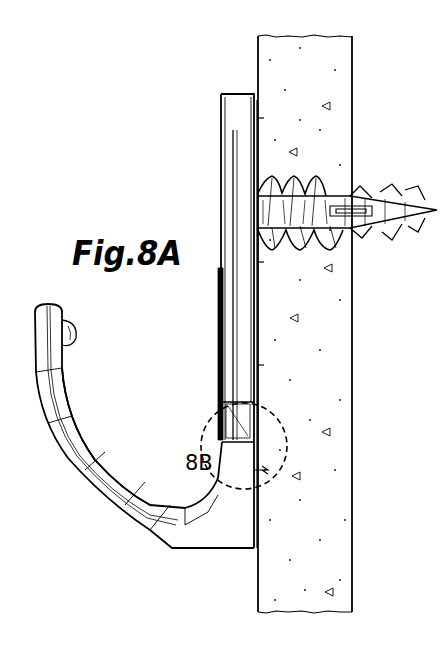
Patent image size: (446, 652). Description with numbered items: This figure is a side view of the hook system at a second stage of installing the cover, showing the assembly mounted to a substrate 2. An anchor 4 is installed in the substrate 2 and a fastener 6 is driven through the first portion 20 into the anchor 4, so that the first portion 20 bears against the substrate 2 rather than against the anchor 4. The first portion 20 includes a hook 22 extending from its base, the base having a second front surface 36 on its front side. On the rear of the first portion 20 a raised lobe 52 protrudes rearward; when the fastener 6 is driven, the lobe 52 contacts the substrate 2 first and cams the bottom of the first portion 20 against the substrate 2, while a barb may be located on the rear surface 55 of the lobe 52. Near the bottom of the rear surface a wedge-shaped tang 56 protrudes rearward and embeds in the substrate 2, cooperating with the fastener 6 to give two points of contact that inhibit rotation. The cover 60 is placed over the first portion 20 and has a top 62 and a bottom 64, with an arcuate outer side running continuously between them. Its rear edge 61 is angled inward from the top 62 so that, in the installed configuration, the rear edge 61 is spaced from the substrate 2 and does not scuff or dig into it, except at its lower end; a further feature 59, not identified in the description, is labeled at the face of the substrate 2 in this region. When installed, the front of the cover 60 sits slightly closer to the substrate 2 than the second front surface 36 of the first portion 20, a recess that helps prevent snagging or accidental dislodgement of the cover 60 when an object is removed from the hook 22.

The substrate 2 is at (348, 557).
The anchor 4 is at (352, 240).
The fastener 6 is at (255, 216).
The first portion 20 is at (72, 492).
The hook 22 is at (97, 453).
The second front surface 36 is at (220, 328).
The raised lobe 52 is at (258, 118).
The rear surface of lobe 55 is at (262, 120).
The tang 56 is at (258, 470).
The wall surface 59 is at (260, 260).
The cover 60 is at (223, 285).
The rear edge 61 is at (260, 364).
The top 62 is at (238, 94).
The bottom 64 is at (224, 410).